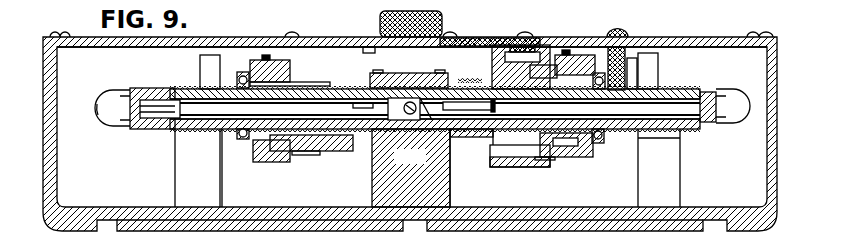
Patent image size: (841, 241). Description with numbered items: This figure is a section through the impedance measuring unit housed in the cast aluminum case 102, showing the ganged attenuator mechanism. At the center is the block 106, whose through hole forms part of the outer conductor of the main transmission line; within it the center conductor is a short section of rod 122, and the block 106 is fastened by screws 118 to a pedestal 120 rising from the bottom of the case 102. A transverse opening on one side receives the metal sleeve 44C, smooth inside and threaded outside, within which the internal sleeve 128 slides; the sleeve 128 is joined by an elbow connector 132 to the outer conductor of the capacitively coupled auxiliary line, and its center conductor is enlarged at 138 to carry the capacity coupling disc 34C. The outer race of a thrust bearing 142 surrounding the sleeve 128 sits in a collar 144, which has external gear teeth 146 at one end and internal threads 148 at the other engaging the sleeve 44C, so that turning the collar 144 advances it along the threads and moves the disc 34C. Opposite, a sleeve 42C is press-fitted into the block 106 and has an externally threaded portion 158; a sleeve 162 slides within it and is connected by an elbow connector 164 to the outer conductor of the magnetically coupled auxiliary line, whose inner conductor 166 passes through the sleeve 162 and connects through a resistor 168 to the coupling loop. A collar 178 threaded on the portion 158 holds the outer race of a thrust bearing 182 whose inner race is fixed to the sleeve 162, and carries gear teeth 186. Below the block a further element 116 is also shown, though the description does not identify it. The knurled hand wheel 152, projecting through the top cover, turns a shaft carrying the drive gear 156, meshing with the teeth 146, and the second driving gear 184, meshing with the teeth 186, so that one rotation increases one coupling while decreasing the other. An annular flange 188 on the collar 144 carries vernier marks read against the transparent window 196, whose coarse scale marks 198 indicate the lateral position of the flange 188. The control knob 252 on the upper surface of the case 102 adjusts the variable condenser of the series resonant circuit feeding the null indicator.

The cast aluminum case 102 is at (56, 221).
The scale marks 198 is at (178, 47).
The transparent window 196 is at (480, 37).
The control knob 252 is at (380, 16).
The knurled hand wheel 152 is at (620, 30).
The sleeve 162 is at (204, 129).
The rod 122 is at (411, 168).
The pedestal 120 is at (448, 183).
The inner conductor 166 is at (193, 86).
The elbow connector 164 is at (110, 128).
The elbow connector 132 is at (740, 124).
The externally threaded portion 158 is at (307, 72).
The second driving gear 184 is at (262, 54).
The resistor 168 is at (369, 42).
The sleeve 42C is at (363, 103).
The screws 118 is at (387, 65).
The block 106 is at (432, 72).
The capacity coupling disc 34C is at (440, 135).
The metal sleeve 44C is at (470, 78).
The internal threads 148 is at (503, 44).
The drive gear 156 is at (566, 50).
The thrust bearing 142 is at (603, 138).
The internal sleeve 128 is at (595, 145).
The thrust bearing 182 is at (238, 141).
The gear teeth 186 is at (271, 162).
The bracket plate 116 is at (363, 152).
The collar 178 is at (305, 155).
The increased diameter portion 138 is at (460, 130).
The annular flange 188 is at (513, 167).
The gear teeth 146 is at (575, 157).
The collar 144 is at (547, 160).